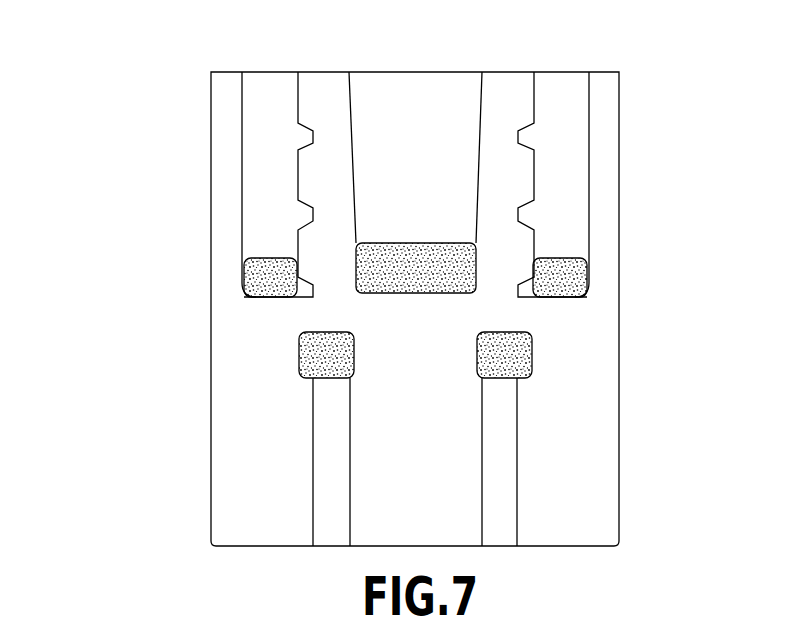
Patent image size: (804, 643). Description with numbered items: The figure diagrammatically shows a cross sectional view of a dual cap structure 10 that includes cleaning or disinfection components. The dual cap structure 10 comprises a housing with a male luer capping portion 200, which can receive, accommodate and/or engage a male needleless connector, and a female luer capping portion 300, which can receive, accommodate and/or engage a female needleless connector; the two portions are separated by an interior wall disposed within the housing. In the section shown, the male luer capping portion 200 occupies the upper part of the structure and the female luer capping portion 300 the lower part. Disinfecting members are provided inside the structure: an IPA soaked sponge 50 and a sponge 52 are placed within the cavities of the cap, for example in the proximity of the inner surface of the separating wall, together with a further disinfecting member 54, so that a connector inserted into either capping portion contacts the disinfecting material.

The dual cap structure 10 is at (233, 56).
The male luer capping portion 200 is at (108, 72).
The female luer capping portion 300 is at (108, 313).
The center conductive feature 54 is at (476, 258).
The sponge 52 is at (587, 268).
The sponge 50 is at (532, 357).